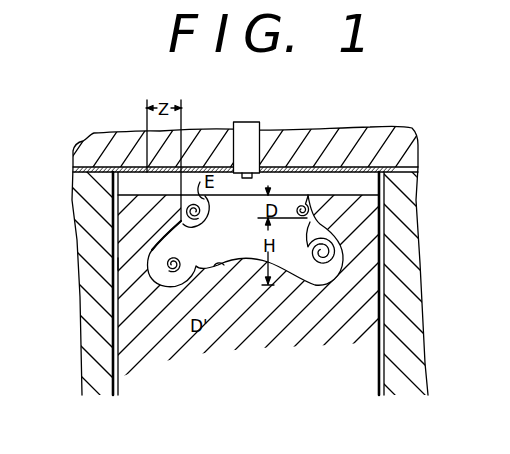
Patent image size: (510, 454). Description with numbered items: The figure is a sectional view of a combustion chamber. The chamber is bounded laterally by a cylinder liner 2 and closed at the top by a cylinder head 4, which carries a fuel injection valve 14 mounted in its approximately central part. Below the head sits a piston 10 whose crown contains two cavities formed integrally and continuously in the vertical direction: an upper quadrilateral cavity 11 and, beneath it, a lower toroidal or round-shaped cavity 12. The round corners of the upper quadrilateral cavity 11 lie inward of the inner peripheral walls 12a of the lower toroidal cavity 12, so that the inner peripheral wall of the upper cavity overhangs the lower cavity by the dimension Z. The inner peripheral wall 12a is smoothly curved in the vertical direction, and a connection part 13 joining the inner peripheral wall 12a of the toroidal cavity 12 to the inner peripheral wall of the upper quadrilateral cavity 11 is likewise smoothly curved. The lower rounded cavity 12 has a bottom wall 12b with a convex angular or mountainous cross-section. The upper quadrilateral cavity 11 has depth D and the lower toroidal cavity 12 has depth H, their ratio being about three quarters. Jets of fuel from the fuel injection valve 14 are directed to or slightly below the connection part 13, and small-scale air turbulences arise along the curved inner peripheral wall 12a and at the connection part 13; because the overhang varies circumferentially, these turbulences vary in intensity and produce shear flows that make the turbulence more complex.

The cylinder liner 2 is at (404, 258).
The cylinder head 4 is at (318, 140).
The piston 10 is at (364, 212).
The upper quadrilateral cavity 11 is at (297, 196).
The lower toroidal cavity 12 is at (176, 284).
The inner peripheral wall 12a is at (123, 264).
The bottom wall 12b is at (219, 267).
The connection part 13 is at (192, 228).
The fuel injection valve 14 is at (241, 121).